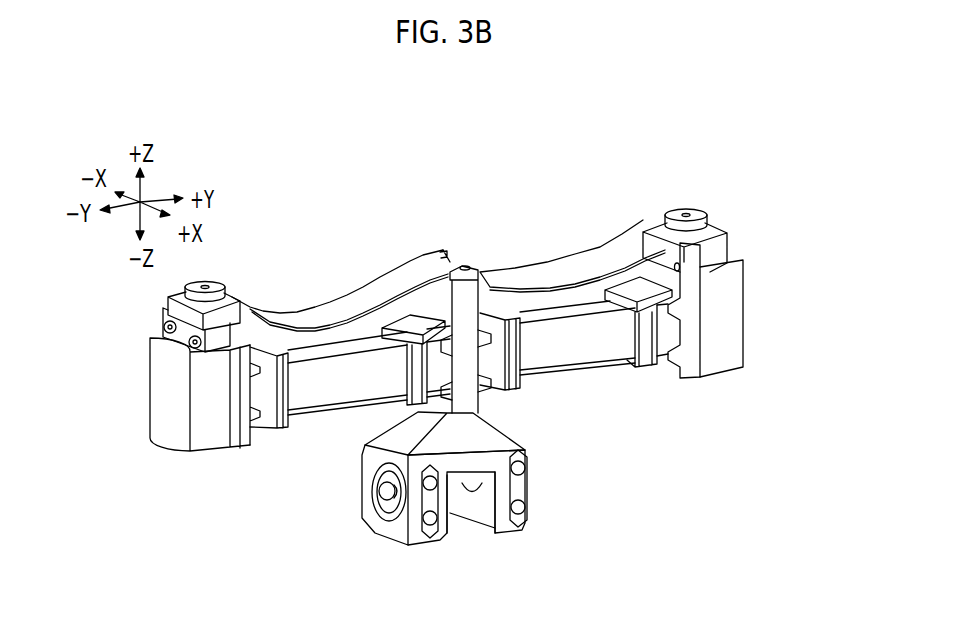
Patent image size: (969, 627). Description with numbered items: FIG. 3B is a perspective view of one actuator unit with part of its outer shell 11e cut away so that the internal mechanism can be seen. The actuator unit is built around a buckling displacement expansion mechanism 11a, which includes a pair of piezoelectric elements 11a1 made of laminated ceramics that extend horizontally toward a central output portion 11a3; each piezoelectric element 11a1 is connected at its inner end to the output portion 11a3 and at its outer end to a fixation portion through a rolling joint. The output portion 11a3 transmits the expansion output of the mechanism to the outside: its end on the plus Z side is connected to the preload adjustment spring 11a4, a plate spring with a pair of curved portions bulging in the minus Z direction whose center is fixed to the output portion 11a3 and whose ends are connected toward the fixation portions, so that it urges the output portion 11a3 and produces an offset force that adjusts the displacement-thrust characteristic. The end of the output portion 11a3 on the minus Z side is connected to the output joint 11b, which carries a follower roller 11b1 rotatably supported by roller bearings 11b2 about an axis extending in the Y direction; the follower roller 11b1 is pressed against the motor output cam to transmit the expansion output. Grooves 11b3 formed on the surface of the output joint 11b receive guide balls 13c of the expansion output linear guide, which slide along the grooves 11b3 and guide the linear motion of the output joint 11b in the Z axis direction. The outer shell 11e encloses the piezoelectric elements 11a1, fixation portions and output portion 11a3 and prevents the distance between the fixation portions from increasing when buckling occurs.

The buckling displacement expansion mechanism 11a is at (716, 198).
The piezoelectric element 11a1 is at (337, 380).
The output portion 11a3 is at (470, 330).
The preload adjustment spring 11a4 is at (610, 262).
The output joint 11b is at (548, 452).
The follower roller 11b1 is at (383, 492).
The roller bearing 11b2 is at (385, 472).
The groove 11b3 is at (503, 485).
The outer shell 11e is at (735, 297).
The guide ball 13c is at (517, 490).